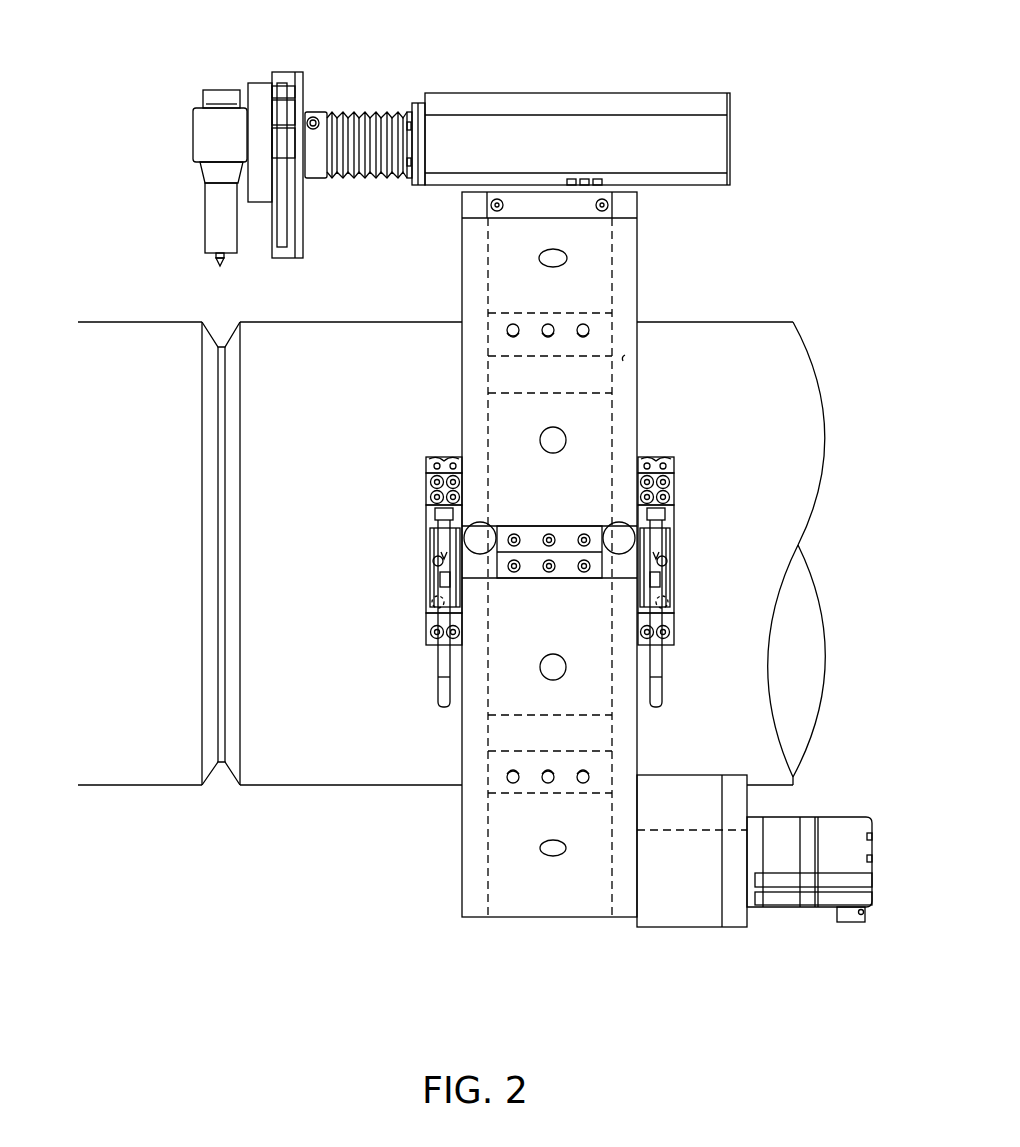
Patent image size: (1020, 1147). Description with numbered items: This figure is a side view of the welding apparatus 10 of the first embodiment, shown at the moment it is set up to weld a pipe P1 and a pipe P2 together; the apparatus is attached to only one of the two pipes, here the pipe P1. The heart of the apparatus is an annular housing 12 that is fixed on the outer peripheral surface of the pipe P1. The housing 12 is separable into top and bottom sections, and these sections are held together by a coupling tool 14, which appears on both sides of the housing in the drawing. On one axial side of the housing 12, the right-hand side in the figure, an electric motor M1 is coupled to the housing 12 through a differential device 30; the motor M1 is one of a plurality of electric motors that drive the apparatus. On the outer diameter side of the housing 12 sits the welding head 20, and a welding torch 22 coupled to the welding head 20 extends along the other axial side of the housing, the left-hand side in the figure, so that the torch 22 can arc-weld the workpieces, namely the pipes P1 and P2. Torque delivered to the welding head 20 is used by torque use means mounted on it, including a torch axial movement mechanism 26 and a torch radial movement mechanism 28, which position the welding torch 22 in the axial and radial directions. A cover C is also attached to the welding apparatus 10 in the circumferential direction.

The welding apparatus 10 is at (432, 1007).
The housing 12 is at (470, 274).
The coupling tool 14 is at (386, 516).
The welding head 20 is at (656, 74).
The welding torch 22 is at (208, 134).
The torch axial movement mechanism 26 is at (360, 115).
The torch radial movement mechanism 28 is at (278, 110).
The differential device 30 is at (683, 918).
The electric motor M1 is at (848, 830).
The cover C is at (548, 897).
The pipe P1 is at (731, 333).
The pipe P2 is at (137, 333).